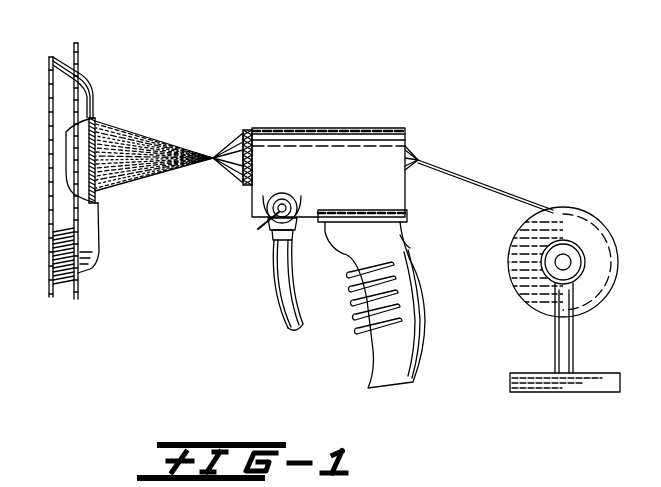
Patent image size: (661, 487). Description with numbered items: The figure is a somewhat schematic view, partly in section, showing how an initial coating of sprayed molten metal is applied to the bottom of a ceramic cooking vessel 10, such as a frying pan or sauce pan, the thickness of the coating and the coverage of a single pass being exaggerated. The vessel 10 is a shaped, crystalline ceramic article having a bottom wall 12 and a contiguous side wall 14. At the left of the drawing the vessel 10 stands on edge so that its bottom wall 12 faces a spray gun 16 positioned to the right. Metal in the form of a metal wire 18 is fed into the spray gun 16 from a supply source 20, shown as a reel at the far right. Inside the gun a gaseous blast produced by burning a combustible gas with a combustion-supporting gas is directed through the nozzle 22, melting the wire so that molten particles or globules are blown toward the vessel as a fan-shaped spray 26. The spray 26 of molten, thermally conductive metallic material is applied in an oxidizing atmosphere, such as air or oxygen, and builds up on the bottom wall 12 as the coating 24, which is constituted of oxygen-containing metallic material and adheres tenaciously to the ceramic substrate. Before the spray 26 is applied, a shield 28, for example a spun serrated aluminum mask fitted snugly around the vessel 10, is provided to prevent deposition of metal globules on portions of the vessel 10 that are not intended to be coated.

The cooking vessel 10 is at (63, 52).
The bottom wall 12 is at (90, 135).
The side wall 14 is at (57, 287).
The spray gun 16 is at (330, 160).
The metal wire 18 is at (471, 180).
The supply source 20 is at (584, 215).
The nozzle 22 is at (219, 150).
The coating 24 is at (97, 122).
The spray 26 is at (137, 150).
The shield 28 is at (79, 53).